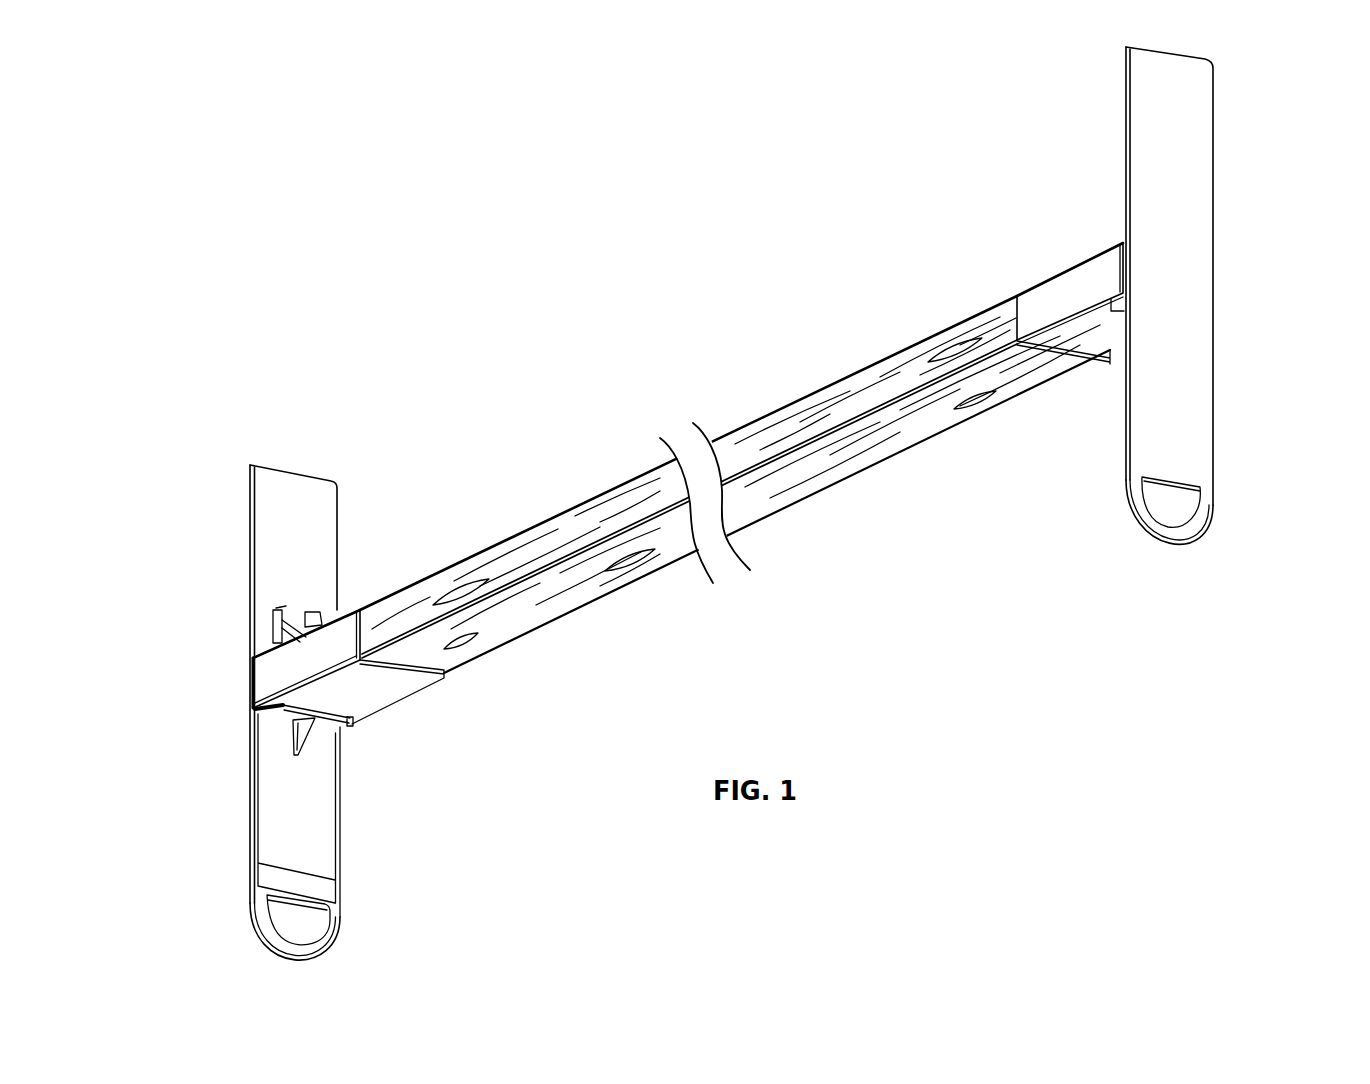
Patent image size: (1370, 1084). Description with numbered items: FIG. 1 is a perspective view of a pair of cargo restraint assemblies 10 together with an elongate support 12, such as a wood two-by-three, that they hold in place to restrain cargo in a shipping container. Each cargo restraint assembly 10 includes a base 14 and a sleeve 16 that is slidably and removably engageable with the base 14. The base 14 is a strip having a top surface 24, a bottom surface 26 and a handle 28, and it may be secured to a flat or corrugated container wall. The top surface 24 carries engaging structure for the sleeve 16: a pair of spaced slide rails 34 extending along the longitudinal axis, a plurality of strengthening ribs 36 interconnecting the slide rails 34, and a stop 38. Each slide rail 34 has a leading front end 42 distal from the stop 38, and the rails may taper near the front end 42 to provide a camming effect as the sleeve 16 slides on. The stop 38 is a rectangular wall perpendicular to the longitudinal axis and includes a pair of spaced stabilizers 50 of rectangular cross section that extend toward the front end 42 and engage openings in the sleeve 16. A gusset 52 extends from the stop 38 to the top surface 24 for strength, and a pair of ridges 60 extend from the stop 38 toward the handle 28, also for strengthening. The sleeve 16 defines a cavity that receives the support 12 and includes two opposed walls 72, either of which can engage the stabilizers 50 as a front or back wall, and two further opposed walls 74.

The cargo restraint assembly 10 is at (257, 428).
The support 12 is at (776, 409).
The base 14 is at (732, 503).
The sleeve 16 is at (653, 471).
The top surface 24 is at (272, 535).
The bottom surface 26 is at (1197, 95).
The handle 28 is at (333, 923).
The slide rails 34 is at (277, 622).
The strengthening ribs 36 is at (298, 620).
The stop 38 is at (273, 715).
The front end 42 is at (280, 604).
The stabilizers 50 is at (270, 748).
The gusset 52 is at (303, 748).
The ridges 60 is at (252, 833).
The opposed walls 72 is at (366, 682).
The opposed walls 74 is at (263, 682).